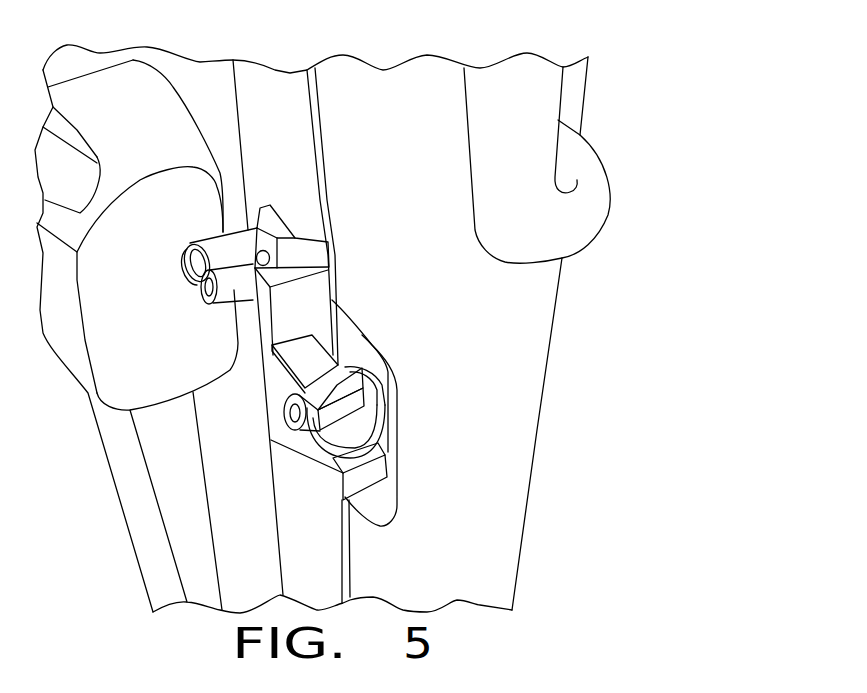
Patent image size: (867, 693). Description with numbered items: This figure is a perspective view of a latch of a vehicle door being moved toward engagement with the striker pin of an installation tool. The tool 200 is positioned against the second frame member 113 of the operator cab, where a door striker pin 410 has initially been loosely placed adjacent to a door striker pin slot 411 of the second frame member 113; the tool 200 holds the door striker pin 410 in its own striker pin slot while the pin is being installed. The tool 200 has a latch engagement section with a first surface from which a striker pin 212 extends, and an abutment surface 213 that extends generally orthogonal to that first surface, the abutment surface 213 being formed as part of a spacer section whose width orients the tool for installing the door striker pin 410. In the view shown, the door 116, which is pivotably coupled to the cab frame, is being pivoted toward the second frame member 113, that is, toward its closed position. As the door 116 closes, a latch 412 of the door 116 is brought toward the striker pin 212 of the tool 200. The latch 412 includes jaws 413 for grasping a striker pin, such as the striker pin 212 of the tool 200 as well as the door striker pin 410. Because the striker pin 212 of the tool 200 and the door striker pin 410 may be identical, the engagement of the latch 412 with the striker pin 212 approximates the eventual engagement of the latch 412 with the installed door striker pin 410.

The door 116 is at (196, 77).
The second frame member 113 is at (488, 402).
The tool 200 is at (364, 352).
The abutment surface 213 is at (315, 297).
The striker pin 212 is at (234, 287).
The latch 412 is at (231, 242).
The jaws 413 is at (190, 277).
The door striker pin 410 is at (343, 392).
The door striker pin slot 411 is at (397, 404).